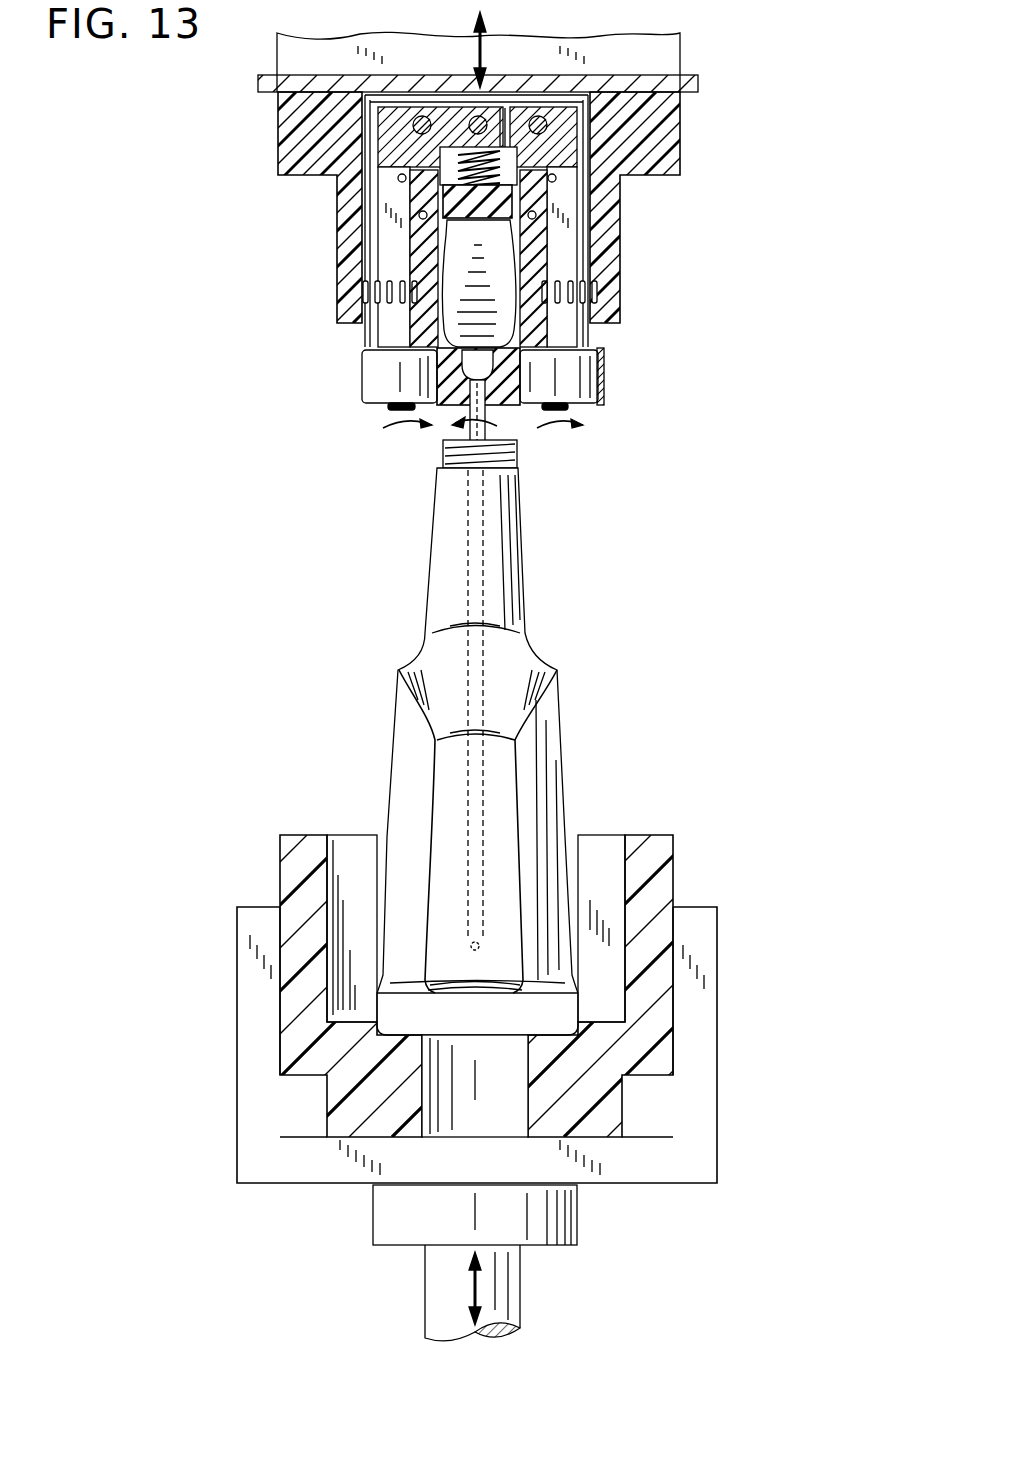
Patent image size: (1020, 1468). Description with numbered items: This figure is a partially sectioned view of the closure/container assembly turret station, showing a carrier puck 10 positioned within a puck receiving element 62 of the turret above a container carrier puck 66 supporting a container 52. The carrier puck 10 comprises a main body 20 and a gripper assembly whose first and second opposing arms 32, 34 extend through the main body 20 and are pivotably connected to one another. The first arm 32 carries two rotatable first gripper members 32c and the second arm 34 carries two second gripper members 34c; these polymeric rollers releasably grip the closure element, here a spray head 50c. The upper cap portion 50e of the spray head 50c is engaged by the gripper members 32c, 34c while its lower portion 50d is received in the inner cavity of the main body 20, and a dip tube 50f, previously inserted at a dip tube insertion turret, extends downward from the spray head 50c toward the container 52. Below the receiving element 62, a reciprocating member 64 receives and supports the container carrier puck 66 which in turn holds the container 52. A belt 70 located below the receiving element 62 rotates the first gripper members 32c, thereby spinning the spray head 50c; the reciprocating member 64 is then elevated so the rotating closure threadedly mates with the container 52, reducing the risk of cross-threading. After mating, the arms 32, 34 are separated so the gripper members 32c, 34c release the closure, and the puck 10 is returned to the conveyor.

The carrier puck 10 is at (234, 140).
The main body 20 is at (612, 233).
The first arm 32 is at (565, 200).
The first gripper members 32c is at (577, 395).
The second arm 34 is at (395, 248).
The second gripper members 34c is at (377, 373).
The spray head 50c is at (503, 295).
The lower portion 50d is at (448, 313).
The upper cap portion 50e is at (515, 408).
The dip tube 50f is at (475, 430).
The container 52 is at (507, 657).
The puck receiving element 62 is at (688, 80).
The reciprocating member 64 is at (700, 977).
The container carrier puck 66 is at (663, 853).
The belt 70 is at (604, 372).